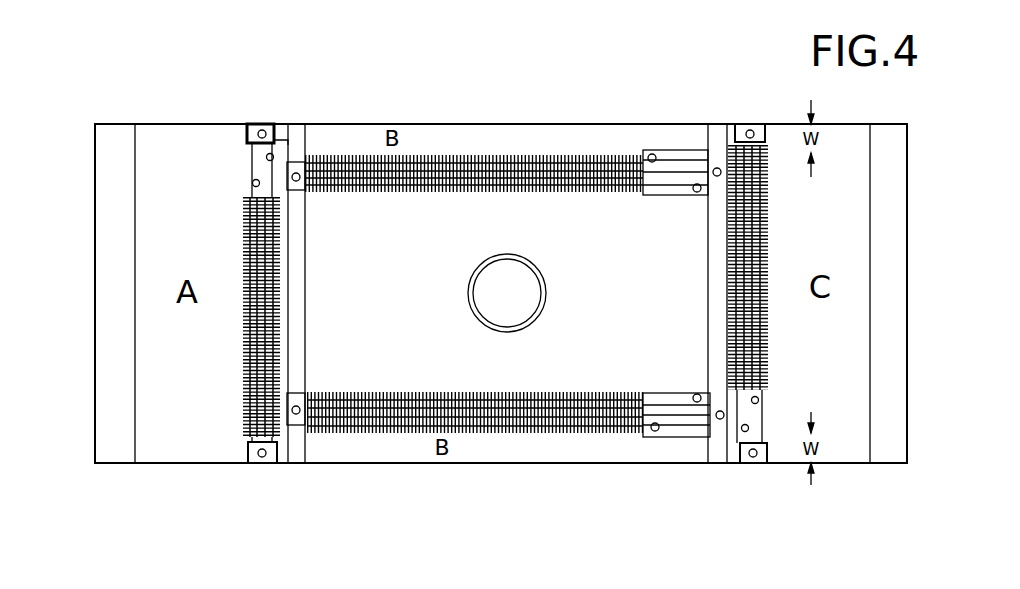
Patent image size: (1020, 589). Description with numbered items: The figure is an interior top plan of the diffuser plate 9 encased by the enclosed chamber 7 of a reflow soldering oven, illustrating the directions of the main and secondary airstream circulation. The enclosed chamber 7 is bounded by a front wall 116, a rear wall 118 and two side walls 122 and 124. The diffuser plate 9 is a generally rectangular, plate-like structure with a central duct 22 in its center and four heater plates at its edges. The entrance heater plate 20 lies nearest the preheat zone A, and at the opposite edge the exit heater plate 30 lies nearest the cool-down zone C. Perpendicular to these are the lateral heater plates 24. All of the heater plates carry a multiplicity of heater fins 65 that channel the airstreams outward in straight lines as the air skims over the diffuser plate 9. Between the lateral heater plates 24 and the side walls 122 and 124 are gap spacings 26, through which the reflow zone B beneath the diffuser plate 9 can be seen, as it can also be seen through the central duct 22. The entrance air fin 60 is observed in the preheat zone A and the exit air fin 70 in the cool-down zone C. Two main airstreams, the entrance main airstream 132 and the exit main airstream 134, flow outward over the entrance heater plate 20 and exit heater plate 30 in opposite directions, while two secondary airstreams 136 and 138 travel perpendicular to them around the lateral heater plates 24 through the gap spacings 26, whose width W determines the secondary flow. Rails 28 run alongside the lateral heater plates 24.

The enclosed chamber 7 is at (140, 88).
The diffuser plate 9 is at (249, 124).
The entrance heater plate 20 is at (250, 442).
The central duct 22 is at (495, 255).
The lateral heater plates 24 is at (547, 160).
The gap spacings 26 is at (610, 122).
The guide rail 28 is at (330, 124).
The exit heater plate 30 is at (748, 418).
The entrance air fin 60 is at (122, 435).
The heater fins 65 is at (507, 160).
The exit air fin 70 is at (897, 407).
The front wall 116 is at (96, 153).
The rear wall 118 is at (907, 152).
The side wall 122 is at (207, 124).
The side wall 124 is at (475, 463).
The entrance main airstream 132 is at (363, 335).
The exit main airstream 134 is at (652, 300).
The secondary airstream 136 is at (405, 252).
The secondary airstream 138 is at (500, 368).